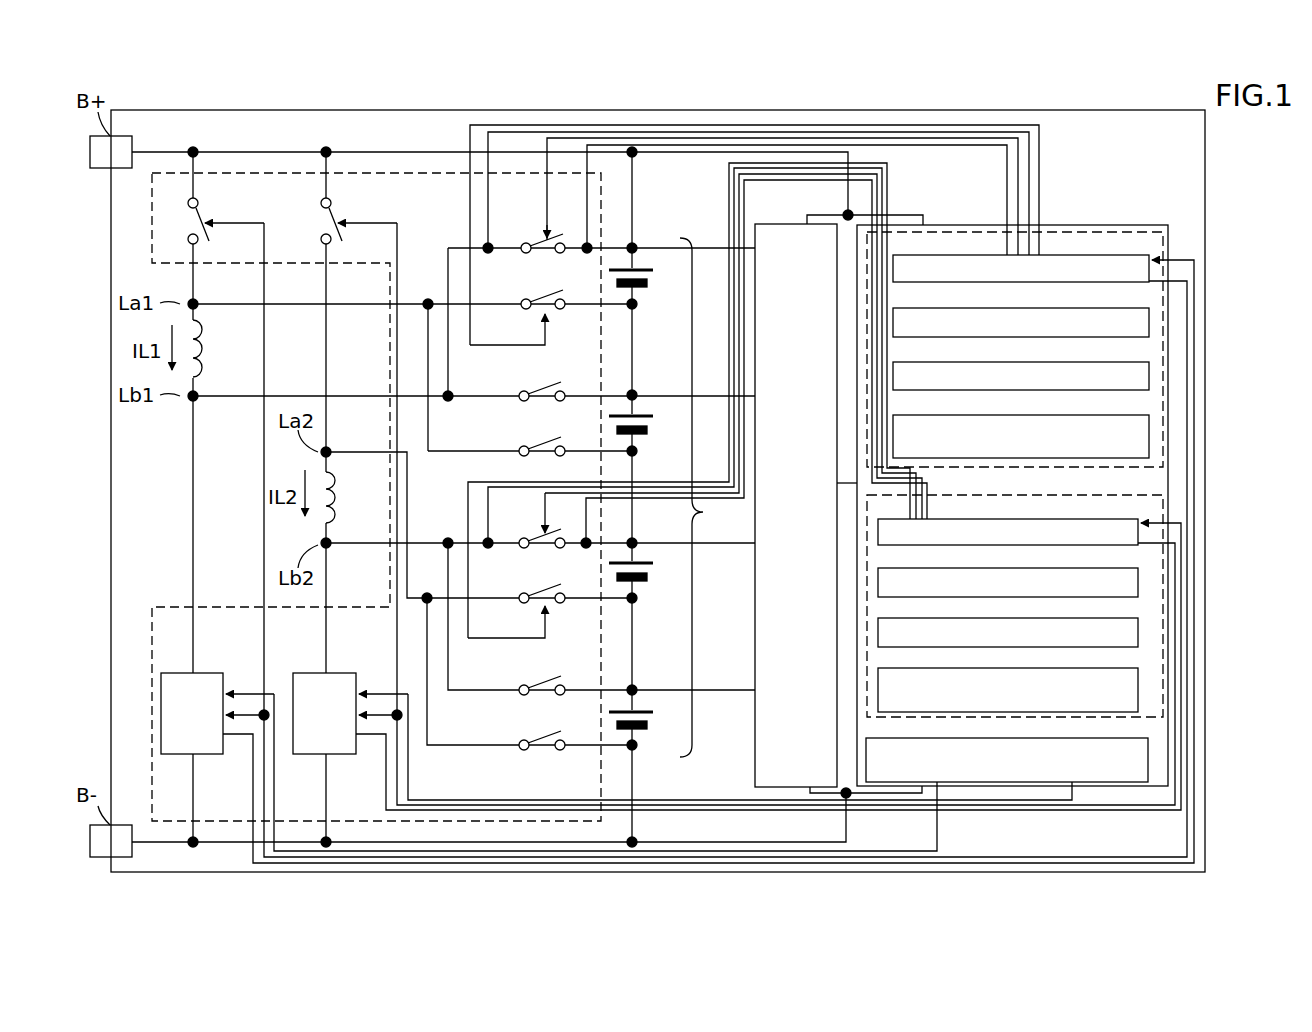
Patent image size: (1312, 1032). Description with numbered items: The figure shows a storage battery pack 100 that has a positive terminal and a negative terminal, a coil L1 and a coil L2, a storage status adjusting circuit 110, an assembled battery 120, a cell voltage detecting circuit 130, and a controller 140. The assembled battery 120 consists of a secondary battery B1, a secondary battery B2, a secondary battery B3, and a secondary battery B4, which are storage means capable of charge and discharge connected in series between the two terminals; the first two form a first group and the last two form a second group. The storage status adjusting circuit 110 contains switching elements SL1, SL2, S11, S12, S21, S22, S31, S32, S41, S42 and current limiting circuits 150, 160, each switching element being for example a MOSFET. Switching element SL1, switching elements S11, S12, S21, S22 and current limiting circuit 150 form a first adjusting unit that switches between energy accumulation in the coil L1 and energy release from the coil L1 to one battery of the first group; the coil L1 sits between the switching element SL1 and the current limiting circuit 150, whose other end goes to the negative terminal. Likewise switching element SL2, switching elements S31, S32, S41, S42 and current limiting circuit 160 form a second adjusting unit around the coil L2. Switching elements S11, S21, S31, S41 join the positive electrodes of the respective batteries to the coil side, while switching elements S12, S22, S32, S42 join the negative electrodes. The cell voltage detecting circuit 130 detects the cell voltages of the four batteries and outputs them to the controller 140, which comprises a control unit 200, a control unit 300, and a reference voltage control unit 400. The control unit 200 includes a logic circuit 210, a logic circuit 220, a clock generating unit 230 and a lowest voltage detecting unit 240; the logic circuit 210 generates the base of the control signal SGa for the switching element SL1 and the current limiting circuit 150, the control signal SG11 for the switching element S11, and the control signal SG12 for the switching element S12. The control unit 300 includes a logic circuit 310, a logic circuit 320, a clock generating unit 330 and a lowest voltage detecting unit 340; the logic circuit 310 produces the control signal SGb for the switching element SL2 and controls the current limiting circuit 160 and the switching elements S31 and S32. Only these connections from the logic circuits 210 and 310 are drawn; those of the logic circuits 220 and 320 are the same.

The storage battery pack 100 is at (1097, 110).
The storage status adjusting circuit 110 is at (420, 168).
The assembled battery 120 is at (679, 497).
The cell voltage detecting circuit 130 is at (780, 224).
The controller 140 is at (1095, 225).
The current limiting circuit 150 is at (205, 673).
The current limiting circuit 160 is at (345, 673).
The control unit 200 is at (1147, 232).
The logic circuit 210 is at (1090, 256).
The logic circuit 220 is at (1090, 309).
The clock generating unit 230 is at (1090, 362).
The lowest voltage detecting unit 240 is at (1090, 416).
The control unit 300 is at (1070, 495).
The logic circuit 310 is at (1082, 519).
The logic circuit 320 is at (1082, 569).
The clock generating unit 330 is at (1082, 619).
The lowest voltage detecting unit 340 is at (1082, 669).
The reference voltage control unit 400 is at (1075, 738).
The switching element SL1 is at (207, 215).
The switching element SL2 is at (340, 215).
The coil L1 is at (205, 350).
The coil L2 is at (338, 497).
The secondary battery B1 is at (645, 283).
The secondary battery B2 is at (645, 429).
The secondary battery B3 is at (645, 576).
The secondary battery B4 is at (645, 725).
The switching element S11 is at (538, 242).
The switching element S12 is at (538, 298).
The switching element S21 is at (536, 390).
The switching element S22 is at (536, 445).
The switching element S31 is at (536, 537).
The switching element S32 is at (536, 592).
The switching element S41 is at (536, 684).
The switching element S42 is at (536, 739).
The control signal SG11 is at (547, 225).
The control signal SG12 is at (488, 345).
The control signal SGa is at (266, 640).
The control signal SGb is at (400, 245).